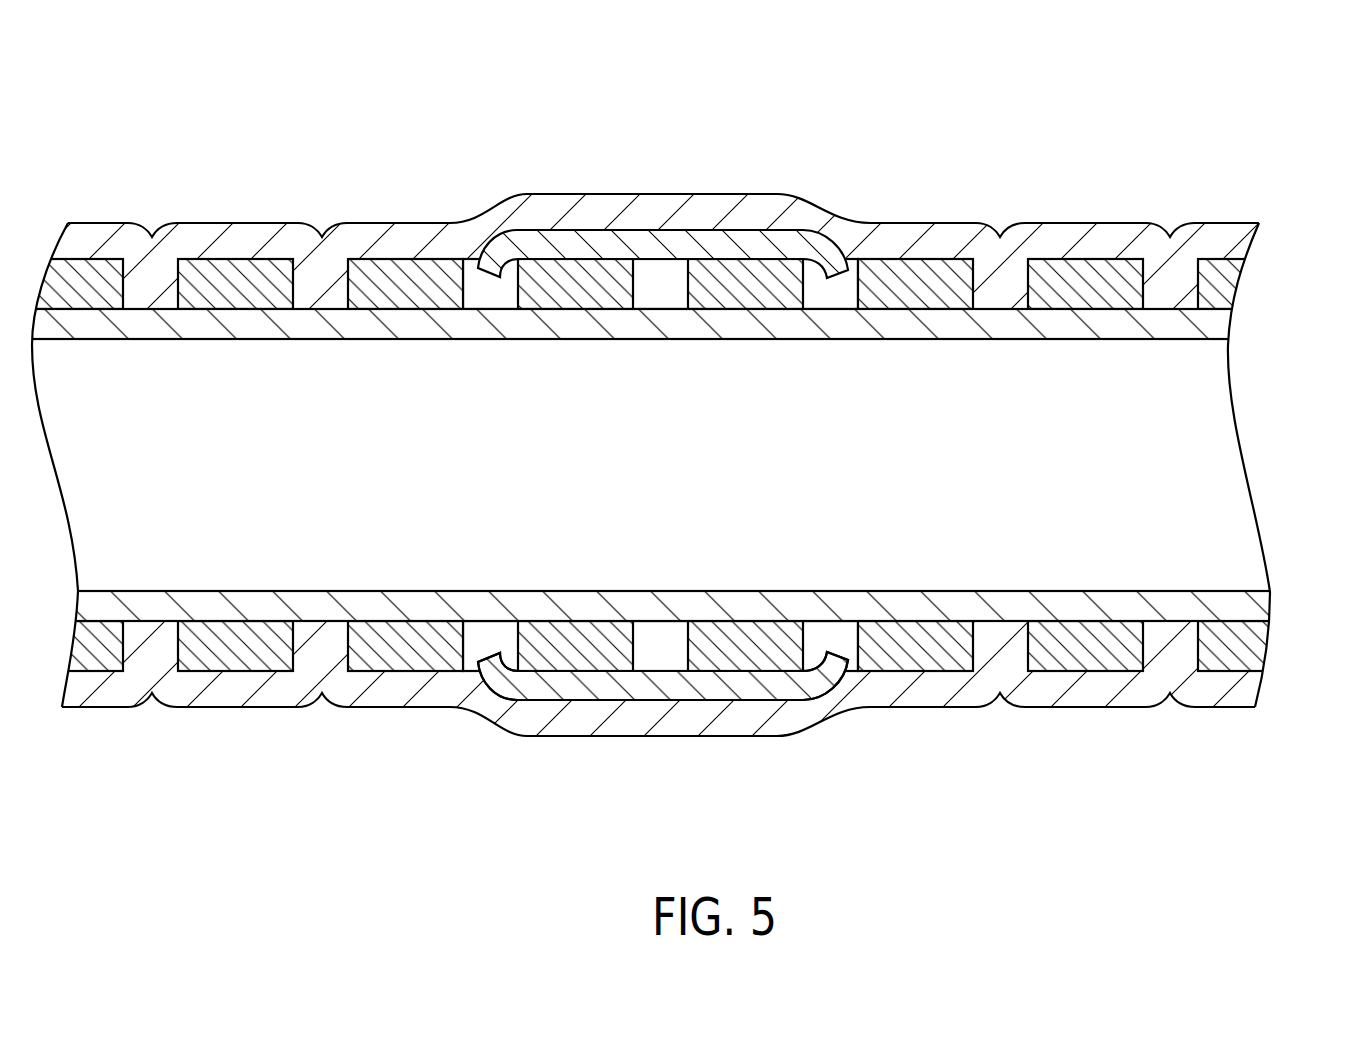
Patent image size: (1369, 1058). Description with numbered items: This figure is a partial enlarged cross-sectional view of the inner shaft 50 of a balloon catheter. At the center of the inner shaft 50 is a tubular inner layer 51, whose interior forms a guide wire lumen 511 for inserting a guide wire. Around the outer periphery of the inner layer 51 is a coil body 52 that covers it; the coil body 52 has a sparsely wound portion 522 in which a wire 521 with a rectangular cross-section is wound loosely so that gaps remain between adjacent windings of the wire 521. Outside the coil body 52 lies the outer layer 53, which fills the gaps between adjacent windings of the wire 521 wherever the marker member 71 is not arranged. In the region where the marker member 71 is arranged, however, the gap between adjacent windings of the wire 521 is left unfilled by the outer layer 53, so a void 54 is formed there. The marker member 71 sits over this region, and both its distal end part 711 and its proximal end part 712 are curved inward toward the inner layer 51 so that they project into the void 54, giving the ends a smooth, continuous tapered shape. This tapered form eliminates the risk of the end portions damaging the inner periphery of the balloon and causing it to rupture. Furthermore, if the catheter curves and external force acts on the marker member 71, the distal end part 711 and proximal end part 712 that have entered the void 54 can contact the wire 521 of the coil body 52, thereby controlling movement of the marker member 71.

The inner shaft 50 is at (684, 454).
The inner layer 51 is at (1217, 328).
The guide wire lumen 511 is at (1162, 590).
The coil body 52 is at (1221, 283).
The wire 521 is at (1100, 655).
The sparsely wound portion 522 is at (1263, 649).
The outer layer 53 is at (1213, 232).
The void 54 is at (487, 297).
The marker member 71 is at (622, 240).
The distal end part 711 is at (487, 668).
The proximal end part 712 is at (837, 663).